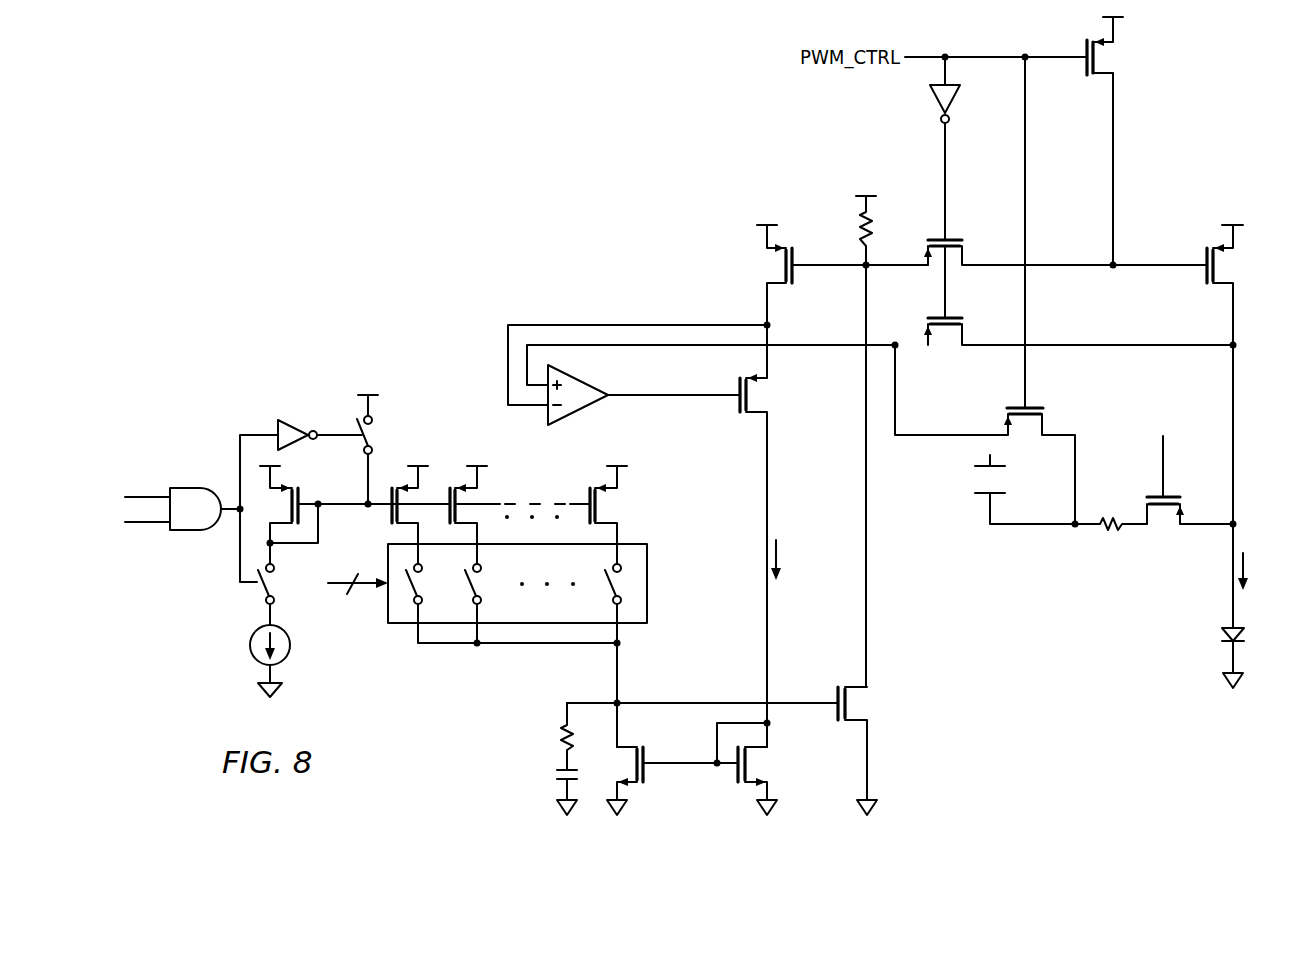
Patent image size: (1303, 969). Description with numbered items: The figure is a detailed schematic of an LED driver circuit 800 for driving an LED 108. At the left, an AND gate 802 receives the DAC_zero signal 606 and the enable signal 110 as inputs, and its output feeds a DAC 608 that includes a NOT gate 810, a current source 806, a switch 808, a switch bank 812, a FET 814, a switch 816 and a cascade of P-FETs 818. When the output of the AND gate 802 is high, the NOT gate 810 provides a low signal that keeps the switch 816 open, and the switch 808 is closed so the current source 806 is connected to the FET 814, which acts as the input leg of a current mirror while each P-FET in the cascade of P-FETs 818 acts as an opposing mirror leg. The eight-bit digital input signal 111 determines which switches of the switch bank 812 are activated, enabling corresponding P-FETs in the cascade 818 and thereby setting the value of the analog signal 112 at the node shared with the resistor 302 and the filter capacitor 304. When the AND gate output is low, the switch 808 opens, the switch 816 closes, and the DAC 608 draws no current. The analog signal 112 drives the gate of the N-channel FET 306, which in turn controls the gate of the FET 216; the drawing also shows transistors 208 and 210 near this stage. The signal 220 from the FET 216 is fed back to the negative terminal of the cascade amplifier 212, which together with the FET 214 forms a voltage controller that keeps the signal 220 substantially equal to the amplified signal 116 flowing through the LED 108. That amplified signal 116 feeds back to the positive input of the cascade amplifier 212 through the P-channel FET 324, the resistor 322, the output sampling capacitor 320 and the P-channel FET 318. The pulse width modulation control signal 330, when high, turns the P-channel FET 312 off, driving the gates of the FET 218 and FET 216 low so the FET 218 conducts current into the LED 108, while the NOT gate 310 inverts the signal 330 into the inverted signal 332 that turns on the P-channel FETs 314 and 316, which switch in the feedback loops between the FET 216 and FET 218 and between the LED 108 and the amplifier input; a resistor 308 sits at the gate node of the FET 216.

The LED driver circuit 800 is at (453, 200).
The AND gate 802 is at (195, 488).
The current source 806 is at (246, 645).
The switch 808 is at (258, 588).
The NOT gate 810 is at (312, 425).
The switch bank 812 is at (648, 586).
The FET 814 is at (305, 496).
The switch 816 is at (376, 442).
The cascade of P-FETs 818 is at (483, 449).
The DAC_zero signal 606 is at (145, 494).
The enable signal 110 is at (138, 528).
The digital input signal 111 is at (363, 598).
The DAC 608 is at (397, 645).
The analog signal 112 is at (612, 700).
The resistor 302 is at (560, 735).
The filter capacitor 304 is at (556, 776).
The transistor 208 is at (648, 756).
The transistor 210 is at (736, 776).
The N-channel FET 306 is at (835, 716).
The cascade amplifier 212 is at (568, 414).
The FET 214 is at (735, 406).
The FET 216 is at (797, 278).
The FET 218 is at (1205, 252).
The signal 220 is at (633, 322).
The resistor 308 is at (858, 230).
The NOT gate 310 is at (928, 102).
The P-channel FET 312 is at (1085, 44).
The P-channel FET 314 is at (934, 238).
The P-channel FET 316 is at (952, 318).
The P-channel FET 318 is at (1033, 406).
The output sampling capacitor 320 is at (1000, 497).
The resistor 322 is at (1106, 532).
The P-channel FET 324 is at (1172, 493).
The pulse width modulation control signal 330 is at (940, 56).
The inverted PWM control signal 332 is at (948, 192).
The amplified signal 116 is at (1248, 568).
The LED 108 is at (1246, 640).